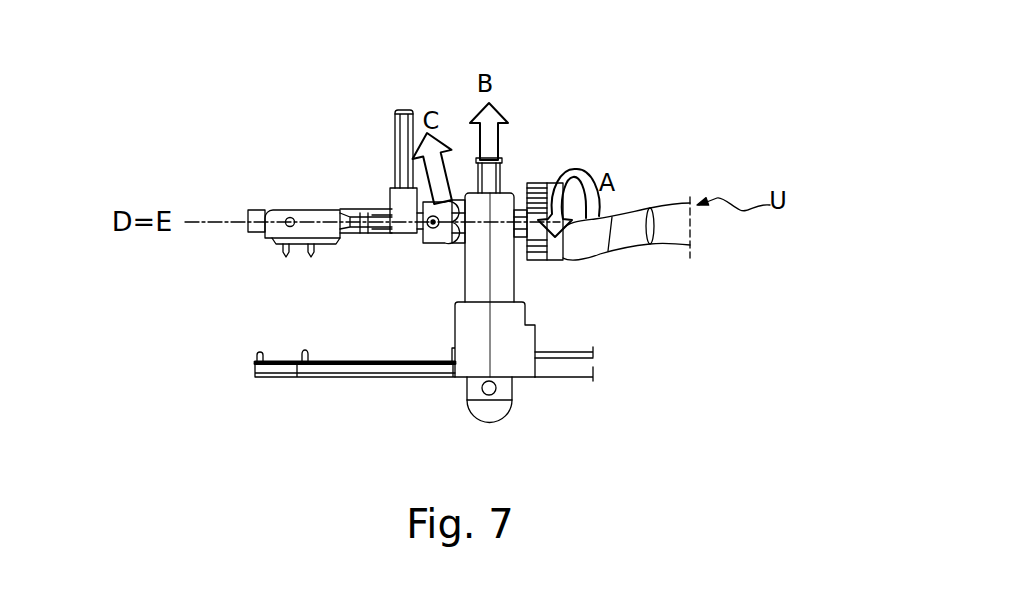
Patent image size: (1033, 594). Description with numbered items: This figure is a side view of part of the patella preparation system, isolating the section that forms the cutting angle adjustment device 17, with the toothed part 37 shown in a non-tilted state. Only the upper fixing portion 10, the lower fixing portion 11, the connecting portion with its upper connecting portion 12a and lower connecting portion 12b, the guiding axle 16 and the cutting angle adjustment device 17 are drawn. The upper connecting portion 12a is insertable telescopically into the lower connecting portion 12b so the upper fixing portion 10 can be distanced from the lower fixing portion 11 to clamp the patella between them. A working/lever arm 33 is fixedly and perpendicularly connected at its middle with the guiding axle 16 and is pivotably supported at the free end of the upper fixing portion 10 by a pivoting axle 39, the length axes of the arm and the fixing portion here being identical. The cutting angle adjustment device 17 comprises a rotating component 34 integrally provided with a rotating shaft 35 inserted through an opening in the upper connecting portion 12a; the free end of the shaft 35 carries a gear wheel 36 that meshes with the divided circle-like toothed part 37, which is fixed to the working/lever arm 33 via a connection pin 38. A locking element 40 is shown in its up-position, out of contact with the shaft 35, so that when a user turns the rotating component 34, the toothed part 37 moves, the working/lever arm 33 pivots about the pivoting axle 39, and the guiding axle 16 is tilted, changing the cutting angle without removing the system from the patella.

The upper fixing portion 10 is at (276, 243).
The lower fixing portion 11 is at (313, 380).
The upper connecting portion 12a is at (464, 283).
The lower connecting portion 12b is at (536, 341).
The guiding axle 16 is at (397, 125).
The cutting angle adjustment device 17 is at (587, 107).
The working/lever arm 33 is at (372, 218).
The rotating component 34 is at (547, 177).
The rotating shaft 35 is at (522, 207).
The gear wheel 36 is at (462, 200).
The toothed part 37 is at (423, 243).
The connection pin 38 is at (394, 167).
The pivoting axle 39 is at (292, 221).
The locking element 40 is at (503, 158).